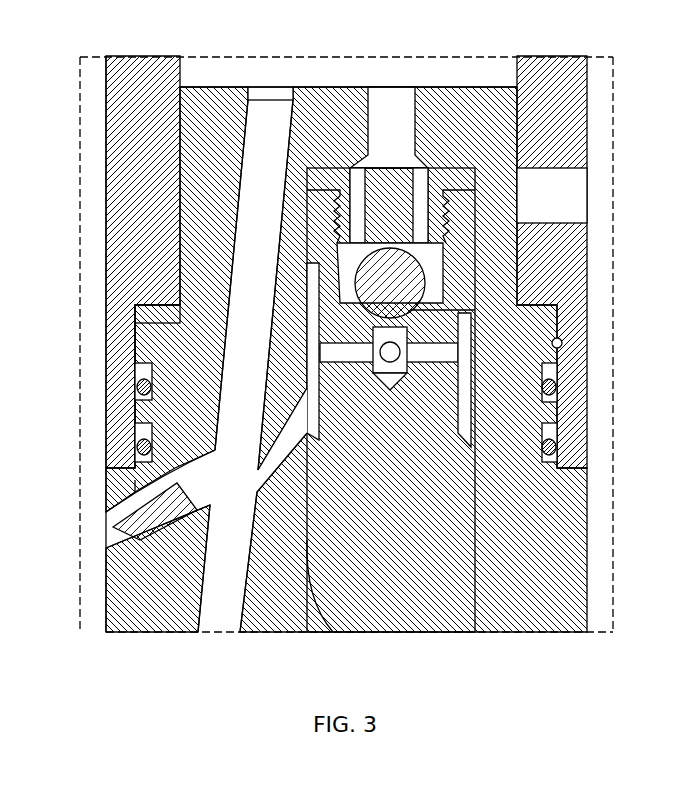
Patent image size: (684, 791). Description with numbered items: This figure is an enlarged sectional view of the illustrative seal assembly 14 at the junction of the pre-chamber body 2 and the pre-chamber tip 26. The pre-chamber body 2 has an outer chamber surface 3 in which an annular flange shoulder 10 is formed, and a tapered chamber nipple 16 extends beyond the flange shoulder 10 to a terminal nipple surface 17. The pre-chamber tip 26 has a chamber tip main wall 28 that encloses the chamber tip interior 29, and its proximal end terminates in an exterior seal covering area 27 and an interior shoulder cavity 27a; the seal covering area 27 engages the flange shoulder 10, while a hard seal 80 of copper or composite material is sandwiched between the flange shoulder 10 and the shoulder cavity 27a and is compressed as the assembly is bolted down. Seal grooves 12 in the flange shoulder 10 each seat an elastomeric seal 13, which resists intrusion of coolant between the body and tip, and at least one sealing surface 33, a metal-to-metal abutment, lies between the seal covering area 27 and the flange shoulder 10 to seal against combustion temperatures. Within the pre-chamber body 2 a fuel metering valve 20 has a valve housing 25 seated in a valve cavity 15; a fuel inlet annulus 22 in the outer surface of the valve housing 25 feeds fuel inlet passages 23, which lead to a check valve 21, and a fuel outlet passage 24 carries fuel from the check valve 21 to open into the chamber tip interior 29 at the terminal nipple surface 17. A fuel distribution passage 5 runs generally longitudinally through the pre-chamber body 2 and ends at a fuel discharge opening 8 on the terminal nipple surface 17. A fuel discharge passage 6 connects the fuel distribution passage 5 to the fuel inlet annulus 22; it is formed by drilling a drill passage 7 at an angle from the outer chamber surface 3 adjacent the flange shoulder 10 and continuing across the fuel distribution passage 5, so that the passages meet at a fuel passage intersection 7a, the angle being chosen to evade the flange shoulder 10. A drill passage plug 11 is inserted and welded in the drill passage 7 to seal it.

The pre-chamber body 2 is at (103, 603).
The outer chamber surface 3 is at (135, 485).
The fuel distribution passage 5 is at (238, 617).
The fuel discharge passage 6 is at (250, 496).
The drill passage 7 is at (115, 560).
The fuel passage intersection 7a is at (125, 512).
The fuel discharge opening 8 is at (288, 100).
The flange shoulder 10 is at (142, 347).
The drill passage plug 11 is at (120, 535).
The seal groove 12 is at (140, 376).
The elastomeric seal 13 is at (140, 387).
The seal assembly 14 is at (597, 457).
The valve cavity 15 is at (333, 632).
The chamber nipple 16 is at (210, 199).
The terminal nipple surface 17 is at (223, 84).
The fuel metering valve 20 is at (360, 645).
The check valve 21 is at (390, 283).
The fuel inlet annulus 22 is at (460, 405).
The fuel inlet passages 23 is at (350, 330).
The fuel outlet passage 24 is at (415, 108).
The valve housing 25 is at (440, 607).
The pre-chamber tip 26 is at (101, 146).
The seal covering area 27 is at (135, 312).
The interior shoulder cavity 27a is at (135, 324).
The chamber tip main wall 28 is at (123, 106).
The chamber tip interior 29 is at (183, 75).
The sealing surface 33 is at (562, 343).
The hard seal 80 is at (163, 302).